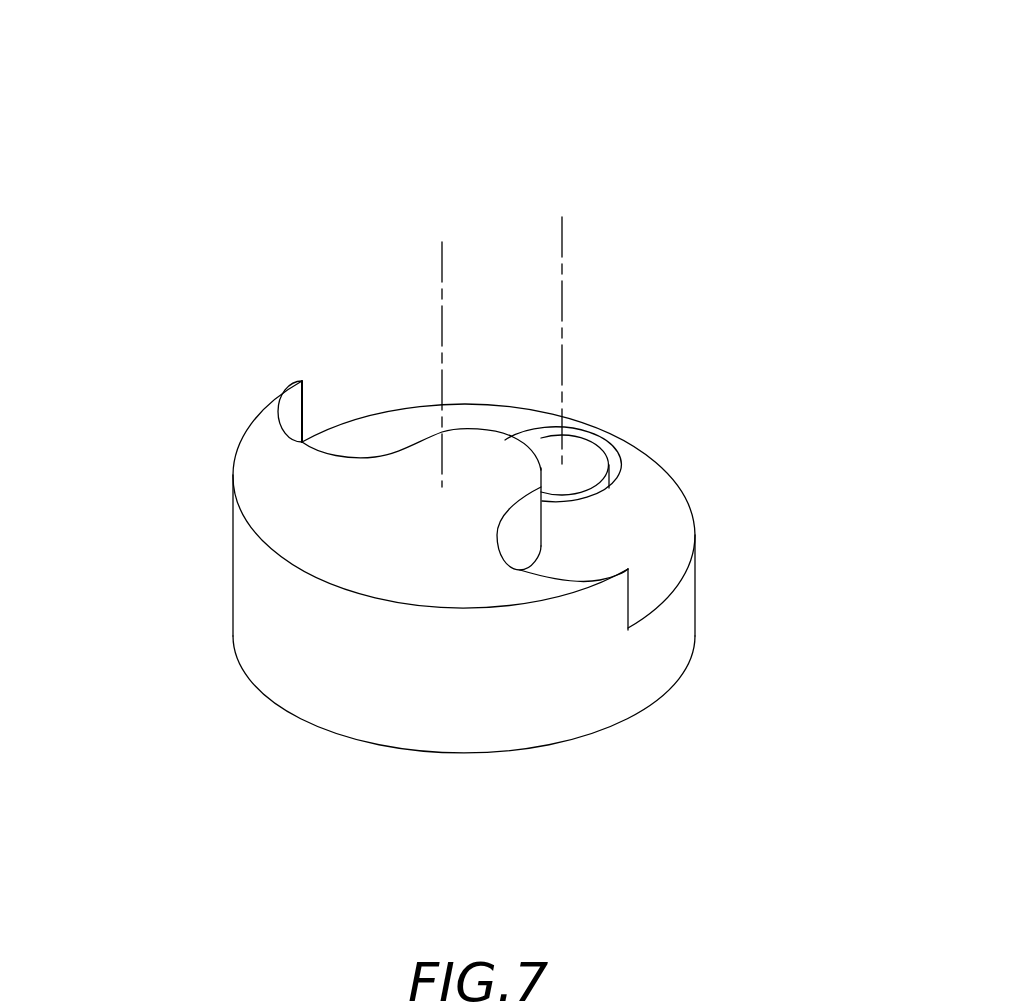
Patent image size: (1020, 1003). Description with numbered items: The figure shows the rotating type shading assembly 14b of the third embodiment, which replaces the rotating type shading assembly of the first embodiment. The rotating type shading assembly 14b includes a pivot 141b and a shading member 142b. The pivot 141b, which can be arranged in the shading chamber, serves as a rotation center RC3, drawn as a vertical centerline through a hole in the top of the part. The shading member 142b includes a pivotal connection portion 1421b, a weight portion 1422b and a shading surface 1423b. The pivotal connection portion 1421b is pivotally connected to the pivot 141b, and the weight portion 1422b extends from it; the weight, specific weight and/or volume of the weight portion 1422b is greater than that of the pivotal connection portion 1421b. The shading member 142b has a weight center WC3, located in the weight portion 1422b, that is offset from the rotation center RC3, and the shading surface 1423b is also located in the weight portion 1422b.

The rotating type shading assembly 14b is at (768, 123).
The shading member 142b is at (690, 348).
The pivotal connection portion 1421b is at (660, 490).
The weight portion 1422b is at (262, 485).
The shading surface 1423b is at (323, 690).
The pivot 141b is at (547, 452).
The rotation center RC3 is at (563, 365).
The weight center WC3 is at (442, 388).